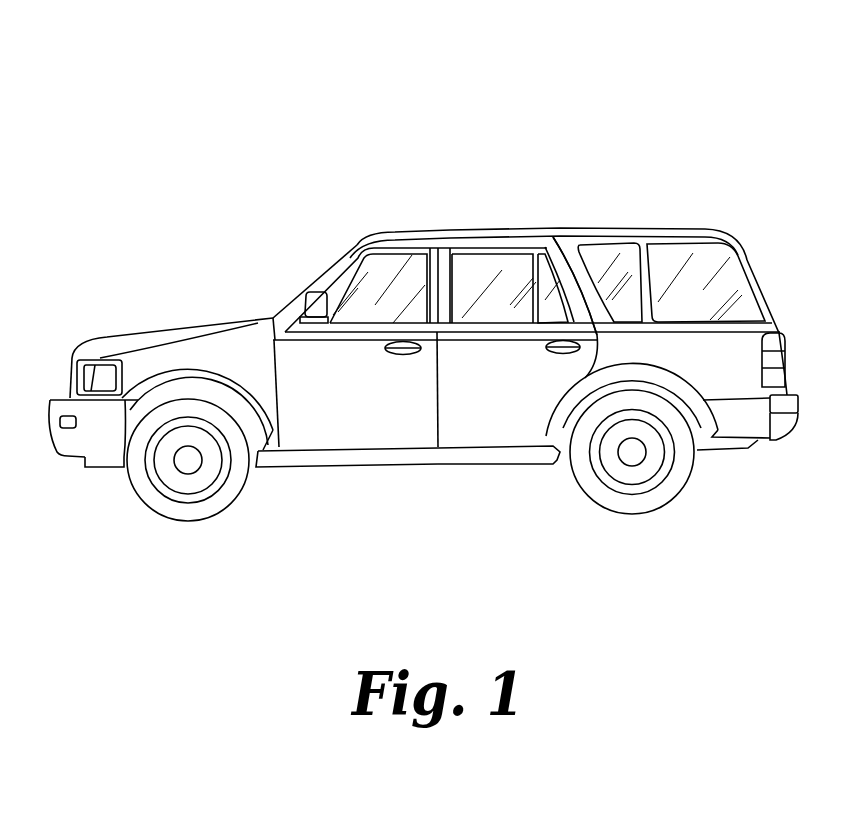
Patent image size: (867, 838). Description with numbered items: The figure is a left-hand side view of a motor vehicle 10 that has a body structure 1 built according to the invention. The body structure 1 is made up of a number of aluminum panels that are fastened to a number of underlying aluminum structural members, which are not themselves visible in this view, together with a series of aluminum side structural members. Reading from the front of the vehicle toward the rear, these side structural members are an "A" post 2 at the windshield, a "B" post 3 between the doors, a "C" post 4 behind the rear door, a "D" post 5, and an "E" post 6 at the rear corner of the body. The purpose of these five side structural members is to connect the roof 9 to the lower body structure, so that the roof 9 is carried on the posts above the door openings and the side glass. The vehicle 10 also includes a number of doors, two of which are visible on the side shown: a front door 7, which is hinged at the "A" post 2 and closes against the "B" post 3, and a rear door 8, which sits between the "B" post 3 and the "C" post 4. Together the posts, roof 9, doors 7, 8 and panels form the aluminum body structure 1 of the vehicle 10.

The motor vehicle 10 is at (441, 118).
The body structure 1 is at (165, 325).
The "A" post 2 is at (313, 268).
The "B" post 3 is at (428, 263).
The roof 9 is at (460, 232).
The "C" post 4 is at (577, 258).
The "D" post 5 is at (633, 267).
The "E" post 6 is at (727, 248).
The front door 7 is at (400, 449).
The rear door 8 is at (503, 447).